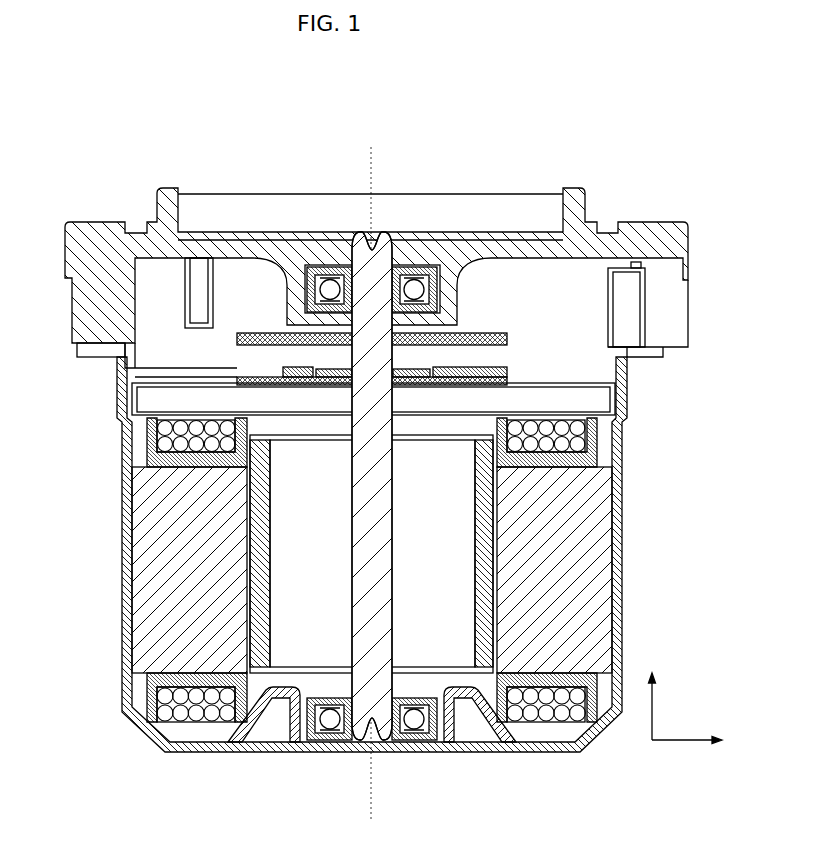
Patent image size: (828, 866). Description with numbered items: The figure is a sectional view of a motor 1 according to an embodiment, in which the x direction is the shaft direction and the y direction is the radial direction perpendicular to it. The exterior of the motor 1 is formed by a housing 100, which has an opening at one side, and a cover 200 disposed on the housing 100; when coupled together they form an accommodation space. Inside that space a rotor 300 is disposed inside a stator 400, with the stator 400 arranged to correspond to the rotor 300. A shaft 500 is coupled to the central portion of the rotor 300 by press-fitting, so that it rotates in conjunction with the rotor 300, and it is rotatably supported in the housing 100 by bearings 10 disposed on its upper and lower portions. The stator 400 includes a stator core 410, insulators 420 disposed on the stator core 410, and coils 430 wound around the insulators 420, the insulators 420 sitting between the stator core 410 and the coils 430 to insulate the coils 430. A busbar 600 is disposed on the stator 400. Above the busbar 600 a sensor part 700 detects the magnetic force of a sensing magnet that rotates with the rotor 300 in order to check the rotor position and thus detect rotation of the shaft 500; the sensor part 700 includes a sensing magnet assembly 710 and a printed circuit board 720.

The motor 1 is at (60, 102).
The bearings 10 is at (437, 273).
The housing 100 is at (117, 376).
The cover 200 is at (65, 262).
The rotor 300 is at (298, 538).
The stator 400 is at (434, 570).
The stator core 410 is at (590, 502).
The insulators 420 is at (597, 458).
The coils 430 is at (558, 425).
The shaft 500 is at (370, 626).
The busbar 600 is at (128, 418).
The sensor part 700 is at (435, 365).
The sensing magnet assembly 710 is at (520, 352).
The printed circuit board 720 is at (520, 334).